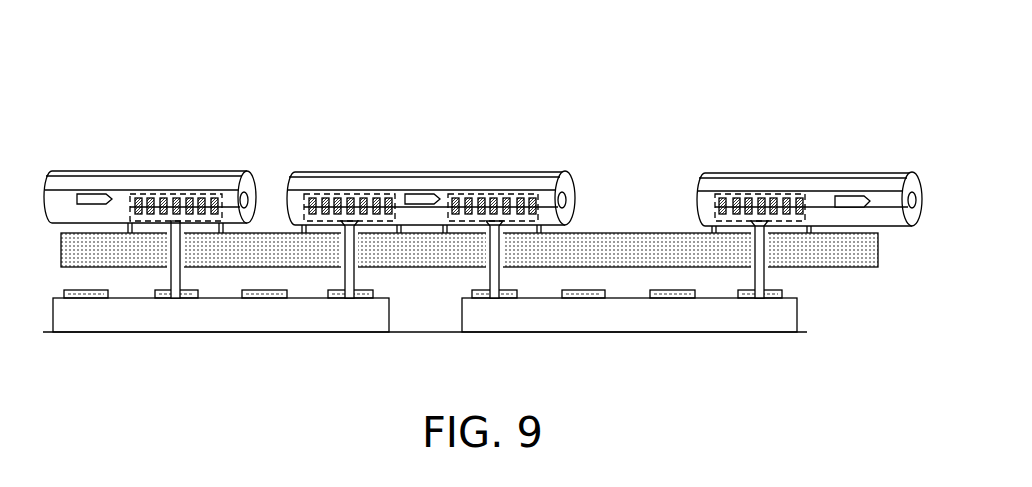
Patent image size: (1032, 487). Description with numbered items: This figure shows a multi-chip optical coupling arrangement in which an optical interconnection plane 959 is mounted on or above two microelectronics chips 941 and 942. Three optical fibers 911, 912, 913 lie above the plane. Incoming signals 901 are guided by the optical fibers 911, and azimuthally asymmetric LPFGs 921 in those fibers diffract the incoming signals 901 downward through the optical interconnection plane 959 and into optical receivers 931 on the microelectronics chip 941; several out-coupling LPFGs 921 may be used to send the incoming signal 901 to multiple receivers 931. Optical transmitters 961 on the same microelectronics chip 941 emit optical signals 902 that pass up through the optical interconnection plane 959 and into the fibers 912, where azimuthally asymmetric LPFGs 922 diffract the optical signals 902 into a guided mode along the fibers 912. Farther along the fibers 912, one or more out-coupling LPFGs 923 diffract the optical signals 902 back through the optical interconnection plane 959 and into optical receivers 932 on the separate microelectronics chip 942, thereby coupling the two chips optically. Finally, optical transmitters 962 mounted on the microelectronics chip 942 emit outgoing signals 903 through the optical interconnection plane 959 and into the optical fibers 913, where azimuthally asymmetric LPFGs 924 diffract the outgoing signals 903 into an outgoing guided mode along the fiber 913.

The incoming signals 901 is at (178, 265).
The optical signals 902 is at (423, 205).
The outgoing signals 903 is at (762, 263).
The optical fibers 911 is at (145, 182).
The fibers 912 is at (397, 182).
The optical fibers 913 is at (818, 183).
The azimuthally asymmetric LPFGs 921 is at (174, 195).
The azimuthally asymmetric LPFGs 922 is at (363, 192).
The LPFGs 923 is at (490, 192).
The azimuthally asymmetric LPFGs 924 is at (760, 192).
The optical receivers 931 is at (203, 298).
The optical receivers 932 is at (525, 298).
The microelectronics chip 941 is at (221, 315).
The microelectronics chip 942 is at (629, 315).
The optical interconnection plane 959 is at (469, 250).
The optical transmitters 961 is at (323, 298).
The optical transmitters 962 is at (732, 298).